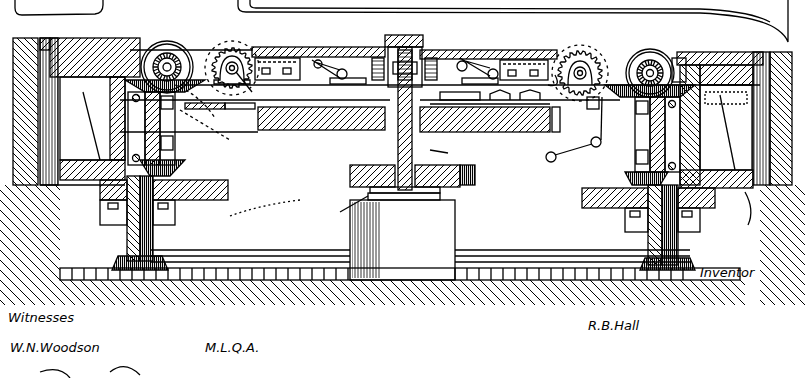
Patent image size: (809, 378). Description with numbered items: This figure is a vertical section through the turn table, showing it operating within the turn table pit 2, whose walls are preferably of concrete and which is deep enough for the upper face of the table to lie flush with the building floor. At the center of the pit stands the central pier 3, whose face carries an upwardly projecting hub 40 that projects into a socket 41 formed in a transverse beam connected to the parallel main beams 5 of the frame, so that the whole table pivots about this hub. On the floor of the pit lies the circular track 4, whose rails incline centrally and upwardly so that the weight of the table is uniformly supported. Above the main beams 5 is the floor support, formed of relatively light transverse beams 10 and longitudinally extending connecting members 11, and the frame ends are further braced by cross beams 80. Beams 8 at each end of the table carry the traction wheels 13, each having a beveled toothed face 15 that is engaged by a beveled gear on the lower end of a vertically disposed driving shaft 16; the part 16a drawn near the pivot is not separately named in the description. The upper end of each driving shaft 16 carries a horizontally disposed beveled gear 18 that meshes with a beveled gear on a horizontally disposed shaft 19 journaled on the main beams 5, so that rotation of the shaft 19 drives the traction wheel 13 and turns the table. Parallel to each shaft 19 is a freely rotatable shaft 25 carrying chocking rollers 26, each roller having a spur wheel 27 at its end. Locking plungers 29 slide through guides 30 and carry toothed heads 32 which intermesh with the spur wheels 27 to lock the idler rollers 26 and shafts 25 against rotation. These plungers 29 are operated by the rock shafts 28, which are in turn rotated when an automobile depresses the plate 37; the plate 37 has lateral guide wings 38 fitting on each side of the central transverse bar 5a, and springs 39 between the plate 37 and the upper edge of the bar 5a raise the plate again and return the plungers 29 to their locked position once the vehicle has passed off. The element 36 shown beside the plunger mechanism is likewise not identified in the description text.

The turn table pit 2 is at (400, 240).
The central pier 3 is at (402, 240).
The circular track 4 is at (128, 258).
The main beams 5 is at (409, 140).
The central transverse bar 5a is at (448, 152).
The beams 8 is at (605, 200).
The transverse beams 10 is at (205, 100).
The longitudinally extending connecting members 11 is at (165, 176).
The traction wheels 13 is at (590, 165).
The toothed face 15 is at (165, 232).
The driving shaft 16 is at (635, 140).
The pedestal cap 16a is at (343, 205).
The beveled gear 18 is at (603, 120).
The horizontally disposed shafts 19 is at (748, 217).
The shafts 25 is at (251, 87).
The chocking rollers 26 is at (185, 46).
The spur wheel 27 is at (655, 50).
The rock shafts 28 is at (512, 60).
The locking plungers 29 is at (560, 50).
The guides 30 is at (524, 56).
The toothed head 32 is at (250, 50).
The block 36 is at (319, 57).
The plate 37 is at (415, 45).
The lateral guide wings 38 is at (412, 60).
The springs 39 is at (392, 70).
The hub 40 is at (385, 200).
The socket 41 is at (380, 165).
The cross beams 80 is at (726, 128).